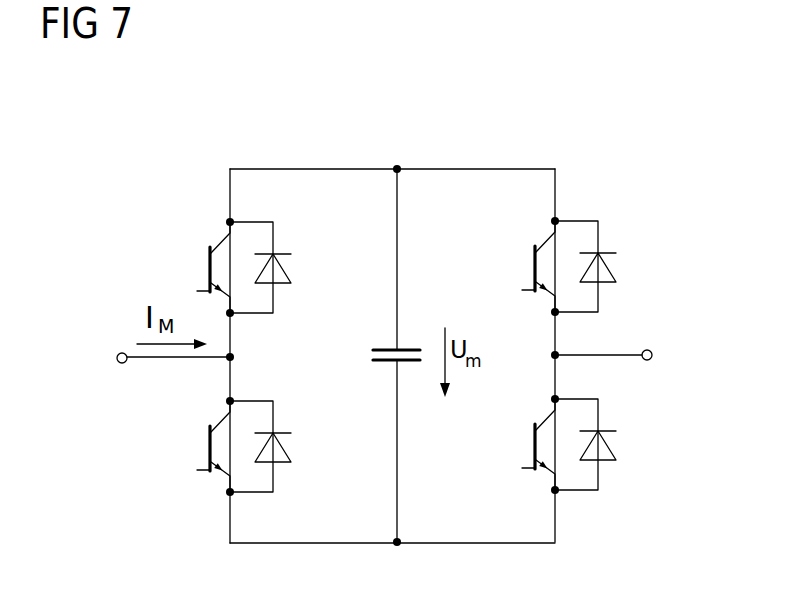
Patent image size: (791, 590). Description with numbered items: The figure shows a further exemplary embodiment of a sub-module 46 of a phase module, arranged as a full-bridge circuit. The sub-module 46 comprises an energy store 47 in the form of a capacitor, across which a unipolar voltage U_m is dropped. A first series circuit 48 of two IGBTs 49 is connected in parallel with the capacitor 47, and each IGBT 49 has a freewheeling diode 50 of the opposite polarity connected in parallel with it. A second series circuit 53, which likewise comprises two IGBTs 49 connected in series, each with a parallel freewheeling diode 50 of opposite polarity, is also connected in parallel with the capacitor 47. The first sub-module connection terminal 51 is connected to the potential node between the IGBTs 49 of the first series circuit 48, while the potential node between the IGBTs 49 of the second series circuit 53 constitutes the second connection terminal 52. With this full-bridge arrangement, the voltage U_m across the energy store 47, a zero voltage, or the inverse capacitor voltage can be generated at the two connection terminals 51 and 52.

The sub-module 46 is at (152, 178).
The energy store 47 is at (412, 348).
The first series circuit 48 is at (279, 190).
The IGBT 49 is at (208, 255).
The freewheeling diode 50 is at (283, 267).
The first sub-module connection terminal 51 is at (117, 358).
The second connection terminal 52 is at (653, 353).
The second series circuit 53 is at (503, 190).